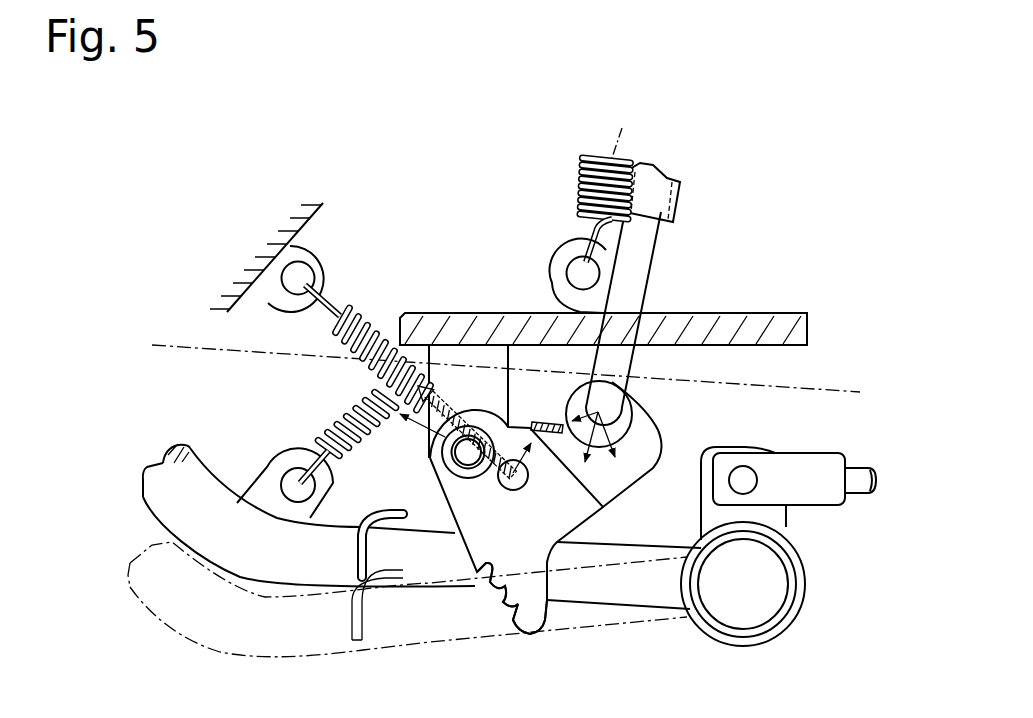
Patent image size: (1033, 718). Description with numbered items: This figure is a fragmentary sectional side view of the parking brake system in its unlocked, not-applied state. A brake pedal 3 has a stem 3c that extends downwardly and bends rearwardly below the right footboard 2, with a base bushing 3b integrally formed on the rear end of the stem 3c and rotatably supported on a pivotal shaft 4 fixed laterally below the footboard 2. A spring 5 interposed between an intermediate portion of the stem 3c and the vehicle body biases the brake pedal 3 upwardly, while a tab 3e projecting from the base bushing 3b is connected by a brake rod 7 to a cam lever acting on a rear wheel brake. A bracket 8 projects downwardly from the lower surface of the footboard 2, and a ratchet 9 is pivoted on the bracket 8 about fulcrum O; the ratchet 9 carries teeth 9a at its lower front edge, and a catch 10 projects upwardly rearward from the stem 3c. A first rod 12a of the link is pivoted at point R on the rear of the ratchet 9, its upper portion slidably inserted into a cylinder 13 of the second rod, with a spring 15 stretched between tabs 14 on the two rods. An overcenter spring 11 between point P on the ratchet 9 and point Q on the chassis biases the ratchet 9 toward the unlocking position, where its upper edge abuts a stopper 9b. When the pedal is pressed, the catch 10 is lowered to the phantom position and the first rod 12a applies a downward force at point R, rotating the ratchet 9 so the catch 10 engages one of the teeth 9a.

The right footboard 2 is at (410, 313).
The brake pedal 3 is at (148, 503).
The base bushing 3b is at (757, 646).
The stem 3c is at (311, 571).
The tab 3e is at (701, 512).
The pivotal shaft 4 is at (754, 601).
The spring 5 is at (333, 408).
The brake rod 7 is at (858, 493).
The bracket 8 is at (458, 357).
The ratchet 9 is at (547, 553).
The teeth 9a is at (473, 582).
The stopper 9b is at (545, 420).
The catch 10 is at (410, 513).
The overcenter spring 11 is at (337, 342).
The first rod 12a is at (650, 253).
The cylinder 13 is at (678, 211).
The tab 14 is at (568, 255).
The spring 15 is at (580, 210).